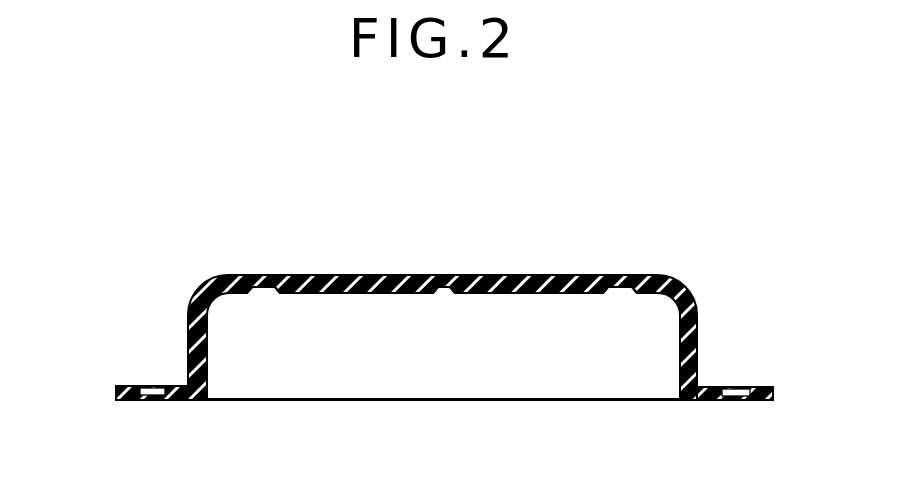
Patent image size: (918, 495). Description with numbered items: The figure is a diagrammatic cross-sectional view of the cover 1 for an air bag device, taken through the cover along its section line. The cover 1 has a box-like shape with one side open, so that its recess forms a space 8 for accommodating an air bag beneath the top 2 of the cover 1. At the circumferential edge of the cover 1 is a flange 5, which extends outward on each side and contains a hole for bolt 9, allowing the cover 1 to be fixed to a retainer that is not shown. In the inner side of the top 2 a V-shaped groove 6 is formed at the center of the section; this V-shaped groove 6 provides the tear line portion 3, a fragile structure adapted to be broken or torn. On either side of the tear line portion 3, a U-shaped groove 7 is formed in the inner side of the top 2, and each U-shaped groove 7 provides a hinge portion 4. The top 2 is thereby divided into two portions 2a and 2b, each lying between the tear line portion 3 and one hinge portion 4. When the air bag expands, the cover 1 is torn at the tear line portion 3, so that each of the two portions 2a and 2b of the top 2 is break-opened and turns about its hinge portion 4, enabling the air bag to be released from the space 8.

The cover 1 is at (196, 272).
The top of the cover 2 is at (241, 276).
The portion of the top adapted to be break-opened 2a is at (540, 275).
The portion of the top adapted to be break-opened 2b is at (381, 276).
The tear line portion 3 is at (448, 277).
The hinge portion 4 is at (267, 277).
The flange 5 is at (124, 386).
The V-shaped groove 6 is at (445, 294).
The U-shaped groove 7 is at (265, 292).
The air bag-accommodating cavity 8 is at (498, 376).
The hole for bolt 9 is at (150, 400).